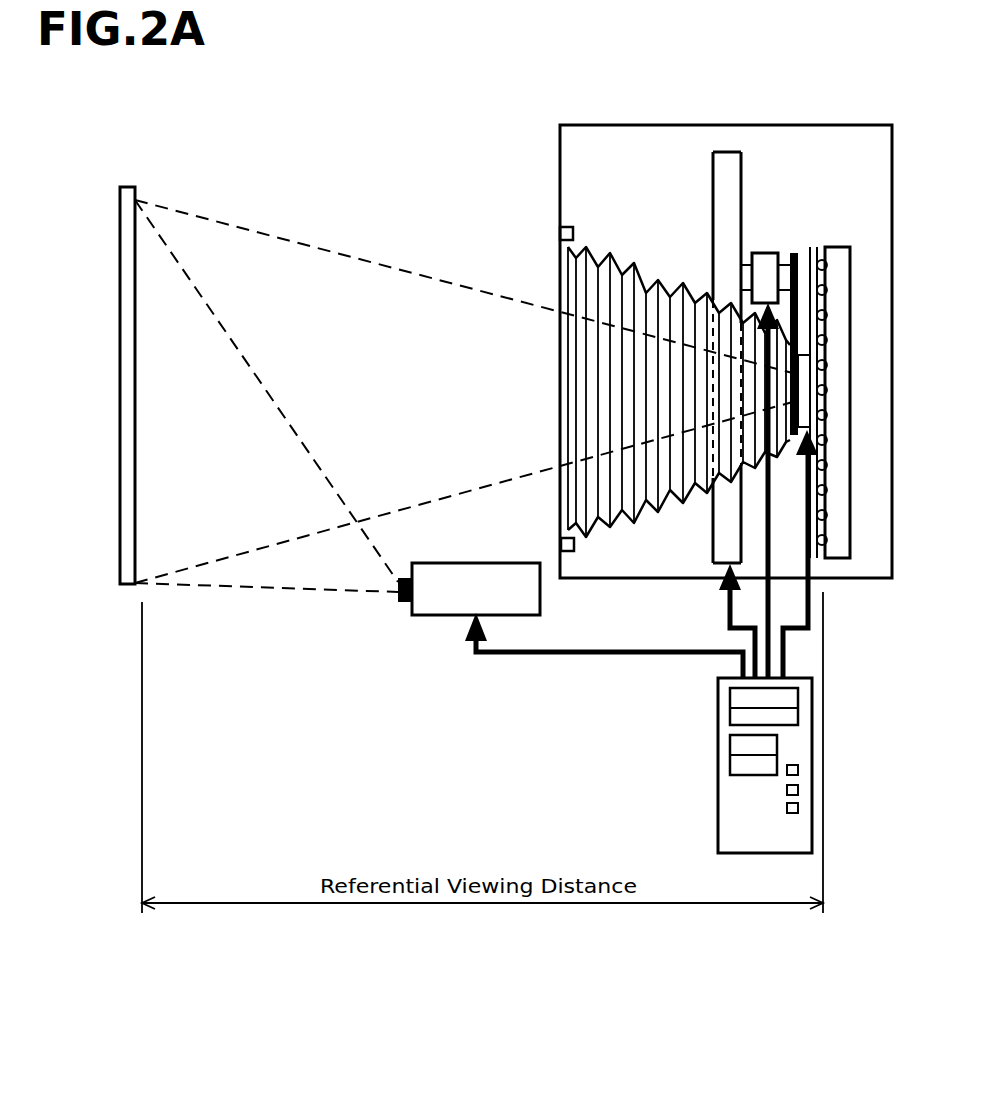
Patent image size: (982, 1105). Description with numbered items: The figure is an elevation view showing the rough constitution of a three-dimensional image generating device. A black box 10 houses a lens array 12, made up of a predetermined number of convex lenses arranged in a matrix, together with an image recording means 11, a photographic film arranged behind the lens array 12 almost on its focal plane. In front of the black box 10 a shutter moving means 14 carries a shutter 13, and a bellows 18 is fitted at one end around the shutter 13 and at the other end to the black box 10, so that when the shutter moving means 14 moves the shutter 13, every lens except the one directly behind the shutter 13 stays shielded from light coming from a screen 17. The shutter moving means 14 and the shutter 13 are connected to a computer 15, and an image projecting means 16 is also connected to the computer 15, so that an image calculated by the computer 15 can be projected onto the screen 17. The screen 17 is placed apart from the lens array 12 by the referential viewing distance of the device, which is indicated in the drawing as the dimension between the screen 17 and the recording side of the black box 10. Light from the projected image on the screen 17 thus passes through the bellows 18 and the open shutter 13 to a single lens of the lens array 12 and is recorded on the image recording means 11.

The black box 10 is at (845, 125).
The image recording means 11 is at (850, 283).
The lens array 12 is at (840, 560).
The shutter 13 is at (810, 256).
The shutter moving means 14 is at (780, 252).
The computer 15 is at (718, 822).
The image projecting means 16 is at (505, 563).
The screen 17 is at (120, 212).
The bellows 18 is at (660, 278).